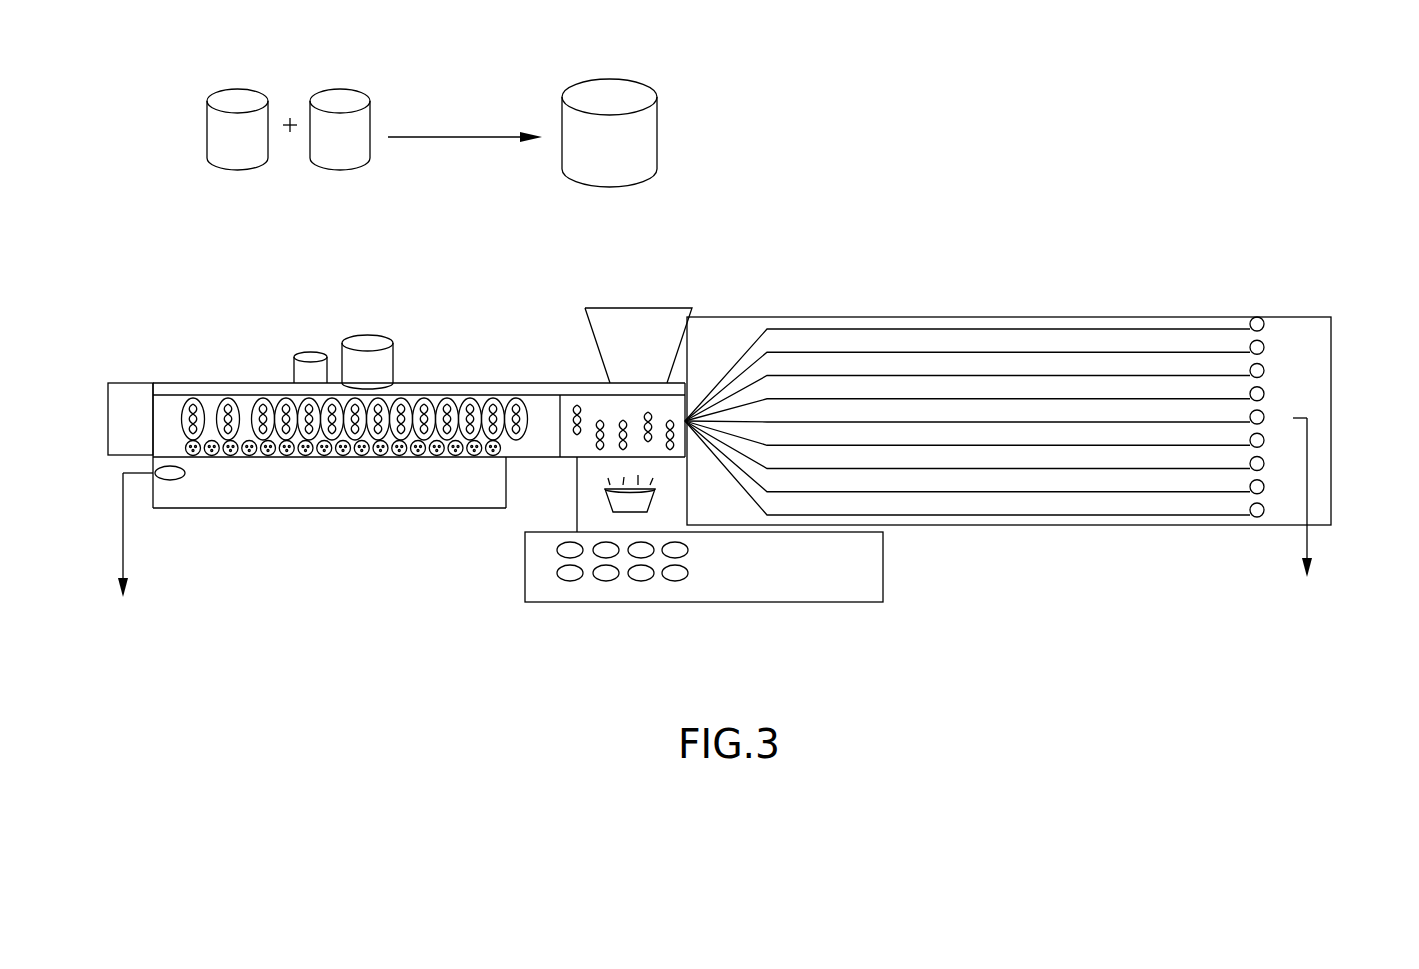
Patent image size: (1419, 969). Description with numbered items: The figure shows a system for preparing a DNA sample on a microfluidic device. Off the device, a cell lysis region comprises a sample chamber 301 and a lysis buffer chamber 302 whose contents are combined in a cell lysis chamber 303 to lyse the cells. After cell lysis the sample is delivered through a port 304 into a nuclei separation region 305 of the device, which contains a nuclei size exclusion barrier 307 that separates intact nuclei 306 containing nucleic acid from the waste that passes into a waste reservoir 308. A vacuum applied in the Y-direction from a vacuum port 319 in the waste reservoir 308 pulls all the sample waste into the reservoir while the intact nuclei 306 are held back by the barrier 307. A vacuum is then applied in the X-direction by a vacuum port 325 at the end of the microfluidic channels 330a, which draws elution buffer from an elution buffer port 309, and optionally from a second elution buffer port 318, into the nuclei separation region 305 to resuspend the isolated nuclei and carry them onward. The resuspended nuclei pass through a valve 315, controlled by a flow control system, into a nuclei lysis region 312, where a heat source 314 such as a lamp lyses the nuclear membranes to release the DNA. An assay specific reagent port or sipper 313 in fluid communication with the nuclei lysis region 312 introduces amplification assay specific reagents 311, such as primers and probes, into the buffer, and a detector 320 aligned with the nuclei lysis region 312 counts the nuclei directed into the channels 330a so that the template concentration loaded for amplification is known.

The sample chamber 301 is at (207, 128).
The lysis buffer chamber 302 is at (370, 118).
The cell lysis chamber 303 is at (657, 120).
The port 304 is at (294, 362).
The nuclei separation region 305 is at (173, 402).
The intact nuclei 306 is at (200, 440).
The nuclei size exclusion barrier 307 is at (252, 456).
The waste reservoir 308 is at (452, 482).
The elution buffer port 309 is at (122, 383).
The amplification assay specific reagents 311 is at (588, 590).
The nuclei lysis region 312 is at (580, 407).
The assay specific reagent port or sipper 313 is at (577, 472).
The heat source 314 is at (605, 504).
The valve 315 is at (560, 417).
The second elution buffer port 318 is at (380, 340).
The vacuum port 319 is at (125, 563).
The detector 320 is at (693, 320).
The vacuum port 325 is at (1310, 542).
The microfluidic channels 330a is at (1148, 330).